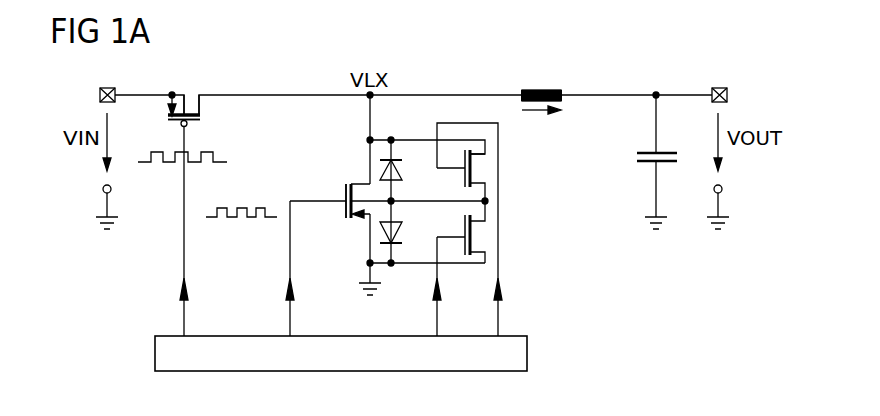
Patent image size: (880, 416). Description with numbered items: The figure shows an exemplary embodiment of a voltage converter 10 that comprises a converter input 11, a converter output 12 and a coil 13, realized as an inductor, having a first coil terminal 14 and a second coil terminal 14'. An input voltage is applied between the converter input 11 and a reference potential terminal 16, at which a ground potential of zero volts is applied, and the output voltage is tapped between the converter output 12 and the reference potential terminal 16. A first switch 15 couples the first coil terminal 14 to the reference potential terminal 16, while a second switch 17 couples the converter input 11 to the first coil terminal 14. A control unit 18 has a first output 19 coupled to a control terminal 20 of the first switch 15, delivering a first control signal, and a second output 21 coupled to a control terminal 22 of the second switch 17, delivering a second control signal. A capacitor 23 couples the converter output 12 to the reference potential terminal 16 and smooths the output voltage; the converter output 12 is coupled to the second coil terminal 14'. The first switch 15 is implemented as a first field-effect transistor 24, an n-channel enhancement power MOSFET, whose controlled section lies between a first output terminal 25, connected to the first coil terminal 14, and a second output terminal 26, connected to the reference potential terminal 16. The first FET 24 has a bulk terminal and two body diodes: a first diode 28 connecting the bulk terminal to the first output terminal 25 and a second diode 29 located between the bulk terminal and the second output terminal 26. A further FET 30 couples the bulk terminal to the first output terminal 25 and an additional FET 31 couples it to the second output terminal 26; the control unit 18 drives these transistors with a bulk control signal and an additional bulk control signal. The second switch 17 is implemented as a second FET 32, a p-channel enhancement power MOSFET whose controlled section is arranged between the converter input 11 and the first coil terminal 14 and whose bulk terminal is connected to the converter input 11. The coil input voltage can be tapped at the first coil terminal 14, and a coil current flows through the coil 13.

The voltage converter 10 is at (672, 57).
The converter input 11 is at (100, 92).
The converter output 12 is at (729, 92).
The coil 13 is at (541, 89).
The first coil terminal 14 is at (509, 71).
The second coil terminal 14' is at (579, 71).
The first switch 15 is at (288, 181).
The reference potential terminal 16 is at (96, 217).
The second switch 17 is at (258, 131).
The control unit 18 is at (528, 356).
The first output 19 is at (287, 335).
The control terminal 20 is at (331, 203).
The second output 21 is at (180, 335).
The control terminal 22 is at (184, 134).
The capacitor 23 is at (636, 157).
The first field-effect transistor 24 is at (345, 196).
The first output terminal 25 is at (366, 139).
The second output terminal 26 is at (366, 264).
The first diode 28 is at (393, 152).
The second diode 29 is at (393, 248).
The further FET 30 is at (462, 178).
The additional FET 31 is at (462, 226).
The second FET 32 is at (200, 116).